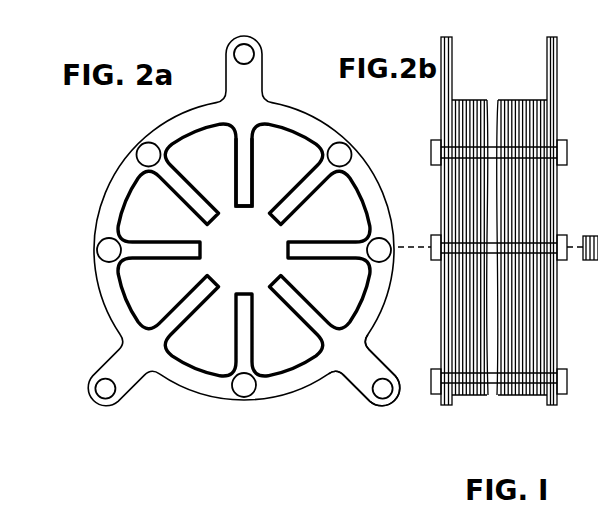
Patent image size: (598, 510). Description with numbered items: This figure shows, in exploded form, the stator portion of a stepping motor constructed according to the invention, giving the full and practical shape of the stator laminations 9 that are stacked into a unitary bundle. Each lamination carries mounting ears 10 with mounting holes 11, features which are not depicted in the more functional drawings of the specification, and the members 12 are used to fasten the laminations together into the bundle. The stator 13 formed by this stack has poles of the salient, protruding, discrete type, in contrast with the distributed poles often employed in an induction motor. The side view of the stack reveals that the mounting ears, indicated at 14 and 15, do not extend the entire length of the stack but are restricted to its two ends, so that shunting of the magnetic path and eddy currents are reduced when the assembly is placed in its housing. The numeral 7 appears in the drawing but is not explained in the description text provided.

In FIG. 2a, the stator laminations 9 is at (178, 384).
In FIG. 2a, the mounting ears 10 is at (391, 410).
In FIG. 2a, the mounting holes 11 is at (378, 392).
In FIG. 2a, the members 12 is at (348, 147).
In FIG. 2a, the stator 13 is at (236, 164).
In FIG. 2b, the mounting ear at end of stack 14 is at (452, 63).
In FIG. 2b, the mounting ear at end of stack 15 is at (547, 64).
In FIG. 1, the stator core 7 is at (588, 509).